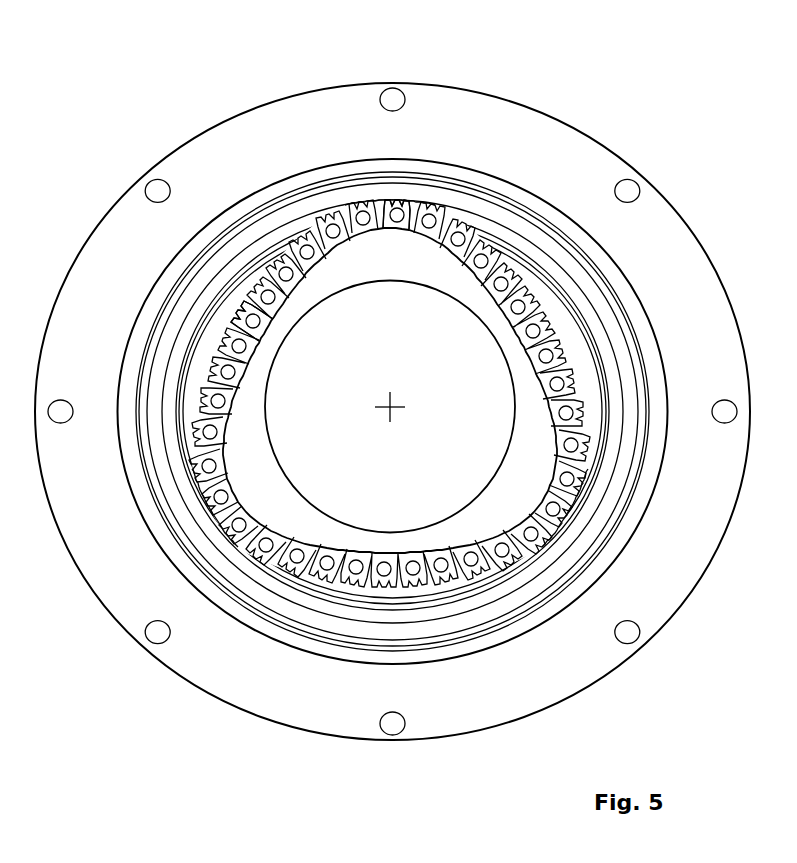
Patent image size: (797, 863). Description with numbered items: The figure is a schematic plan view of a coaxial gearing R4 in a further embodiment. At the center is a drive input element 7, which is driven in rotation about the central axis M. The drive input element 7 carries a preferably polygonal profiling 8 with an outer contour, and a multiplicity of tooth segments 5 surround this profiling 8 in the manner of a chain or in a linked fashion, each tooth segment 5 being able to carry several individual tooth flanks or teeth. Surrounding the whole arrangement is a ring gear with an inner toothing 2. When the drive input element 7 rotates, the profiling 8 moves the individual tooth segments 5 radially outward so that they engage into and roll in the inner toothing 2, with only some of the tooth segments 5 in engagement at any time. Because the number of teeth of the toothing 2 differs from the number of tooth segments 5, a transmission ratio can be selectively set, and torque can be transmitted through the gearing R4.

The gearing R4 is at (636, 118).
The inner toothing 2 is at (620, 273).
The tooth segments 5 is at (543, 296).
The drive input element 7 is at (300, 325).
The profiling 8 is at (243, 500).
The central axis M is at (391, 408).